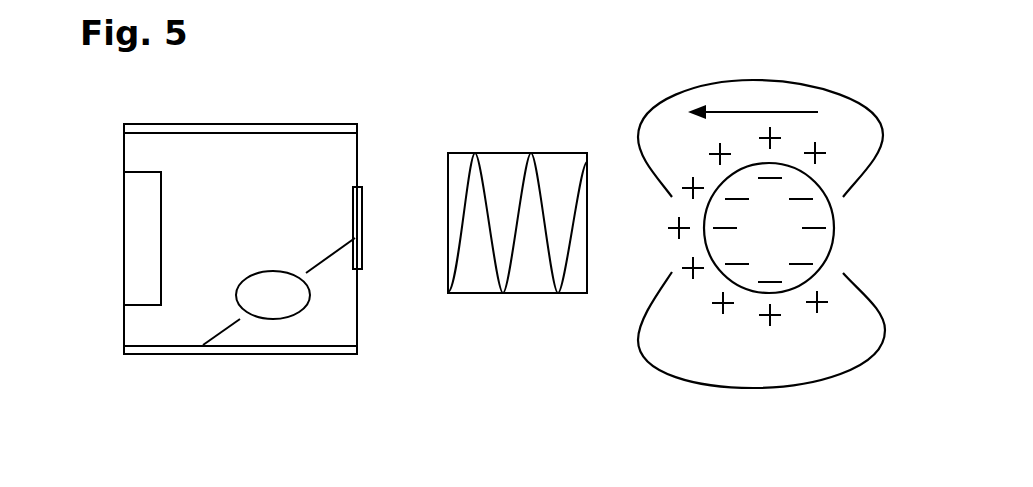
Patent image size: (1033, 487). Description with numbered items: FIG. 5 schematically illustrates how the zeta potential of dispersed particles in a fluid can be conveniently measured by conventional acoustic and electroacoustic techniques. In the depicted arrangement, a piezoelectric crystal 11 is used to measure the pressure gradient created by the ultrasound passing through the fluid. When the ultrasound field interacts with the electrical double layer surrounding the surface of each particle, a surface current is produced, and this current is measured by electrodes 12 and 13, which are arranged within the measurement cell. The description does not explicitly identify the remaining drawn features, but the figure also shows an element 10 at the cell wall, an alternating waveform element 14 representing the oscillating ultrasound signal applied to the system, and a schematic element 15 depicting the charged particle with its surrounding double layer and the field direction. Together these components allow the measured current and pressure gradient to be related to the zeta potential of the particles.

The electrode 10 is at (124, 233).
The piezoelectric crystal 11 is at (111, 192).
The electrode 12 is at (268, 110).
The electrode 13 is at (362, 205).
The alternating voltage signal 14 is at (532, 324).
The charged particle field diagram 15 is at (702, 53).